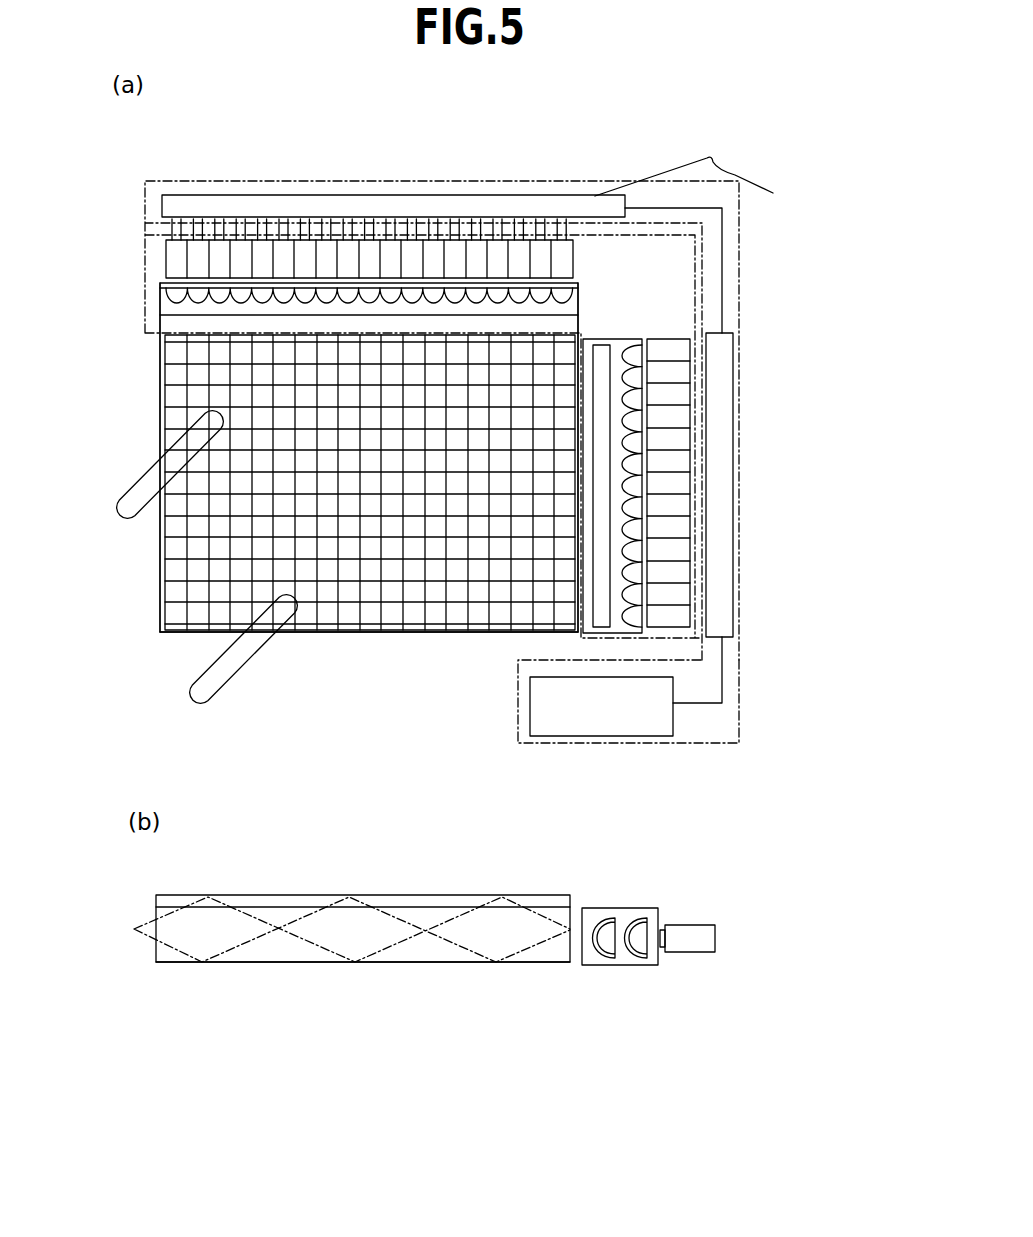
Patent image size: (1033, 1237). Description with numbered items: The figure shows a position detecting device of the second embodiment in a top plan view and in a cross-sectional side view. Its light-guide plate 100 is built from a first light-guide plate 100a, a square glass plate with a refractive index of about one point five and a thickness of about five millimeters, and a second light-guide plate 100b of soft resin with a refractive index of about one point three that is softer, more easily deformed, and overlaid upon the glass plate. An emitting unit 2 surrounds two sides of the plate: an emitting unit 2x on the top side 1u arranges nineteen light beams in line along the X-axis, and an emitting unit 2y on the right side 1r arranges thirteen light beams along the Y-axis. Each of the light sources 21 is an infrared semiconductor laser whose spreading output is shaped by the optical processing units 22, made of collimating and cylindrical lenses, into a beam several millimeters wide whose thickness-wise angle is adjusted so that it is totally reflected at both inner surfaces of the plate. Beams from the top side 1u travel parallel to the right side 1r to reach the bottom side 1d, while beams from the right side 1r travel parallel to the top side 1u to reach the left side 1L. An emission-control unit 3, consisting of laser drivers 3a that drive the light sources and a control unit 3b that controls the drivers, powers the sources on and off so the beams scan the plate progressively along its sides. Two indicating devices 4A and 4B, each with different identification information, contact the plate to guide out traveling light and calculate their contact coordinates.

The emitting unit 2 is at (147, 272).
The light sources 21 is at (178, 245).
The optical processing units 22 is at (517, 298).
The emitting unit 2x is at (400, 255).
The emitting unit 2y is at (733, 625).
The emission-control unit 3 is at (739, 660).
The laser drivers 3a is at (733, 357).
The control unit 3b is at (601, 706).
The top side 1u is at (247, 335).
The left side 1L is at (131, 400).
The right side 1r is at (572, 460).
The bottom side 1d is at (450, 632).
The indicating device 4A is at (121, 519).
The indicating device 4B is at (193, 702).
The light-guide plate 100 is at (378, 600).
The first light-guide plate 100a is at (258, 953).
The second light-guide plate 100b is at (258, 906).